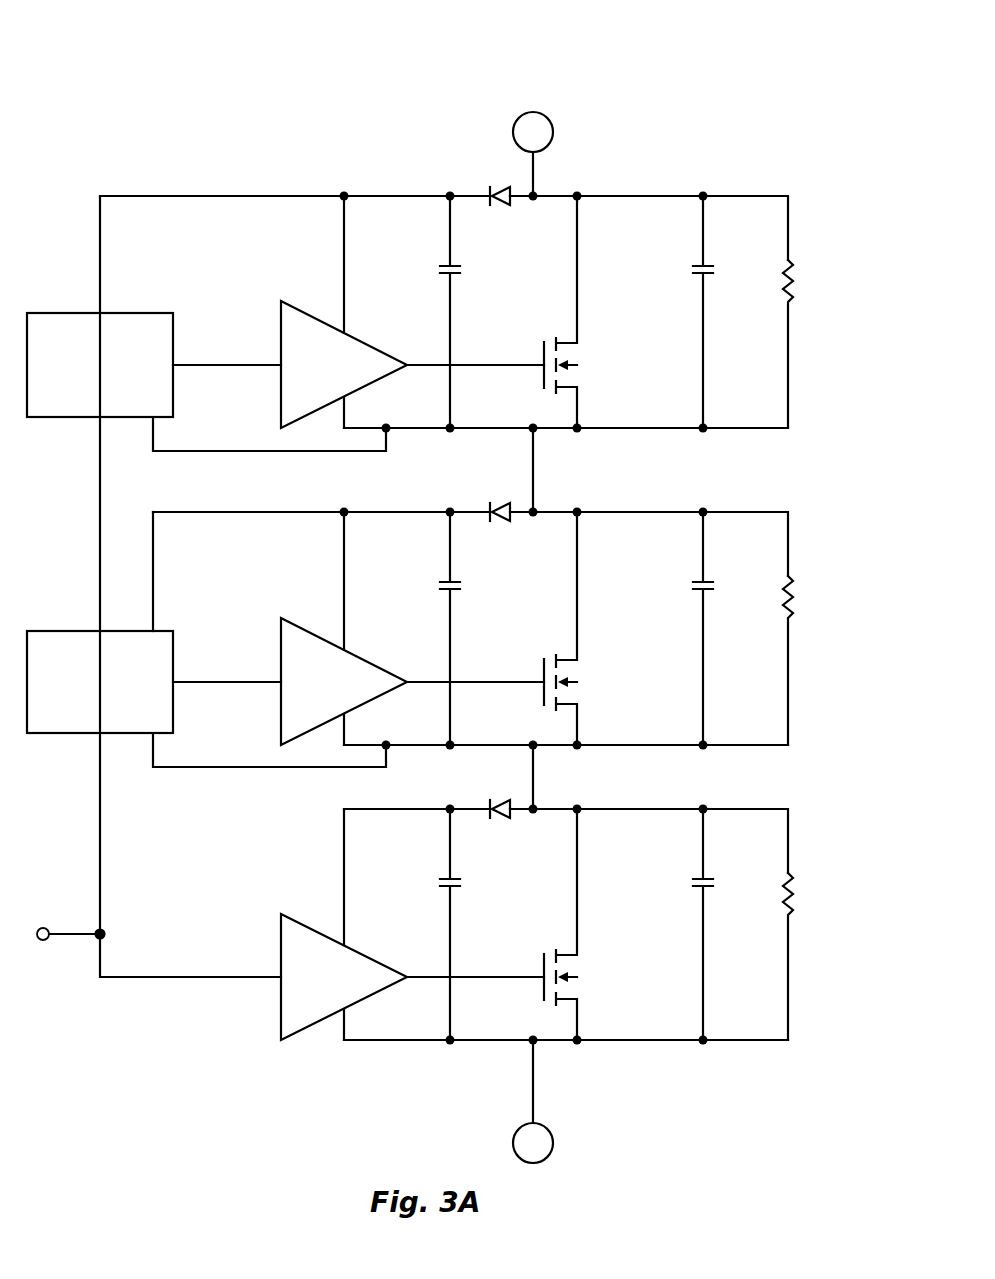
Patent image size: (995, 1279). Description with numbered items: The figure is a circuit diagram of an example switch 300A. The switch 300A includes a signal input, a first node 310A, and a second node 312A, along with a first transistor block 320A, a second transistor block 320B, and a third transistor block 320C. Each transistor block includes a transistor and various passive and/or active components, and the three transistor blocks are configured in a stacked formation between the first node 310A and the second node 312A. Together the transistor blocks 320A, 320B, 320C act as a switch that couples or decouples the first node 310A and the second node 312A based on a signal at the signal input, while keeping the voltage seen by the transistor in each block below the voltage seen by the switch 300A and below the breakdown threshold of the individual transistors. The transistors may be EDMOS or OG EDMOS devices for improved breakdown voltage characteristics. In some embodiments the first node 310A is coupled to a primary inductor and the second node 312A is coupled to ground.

The switch 300A is at (125, 55).
The first node 310A is at (553, 134).
The second node 312A is at (553, 1138).
The first transistor block 320A is at (787, 176).
The second transistor block 320B is at (787, 489).
The third transistor block 320C is at (787, 788).